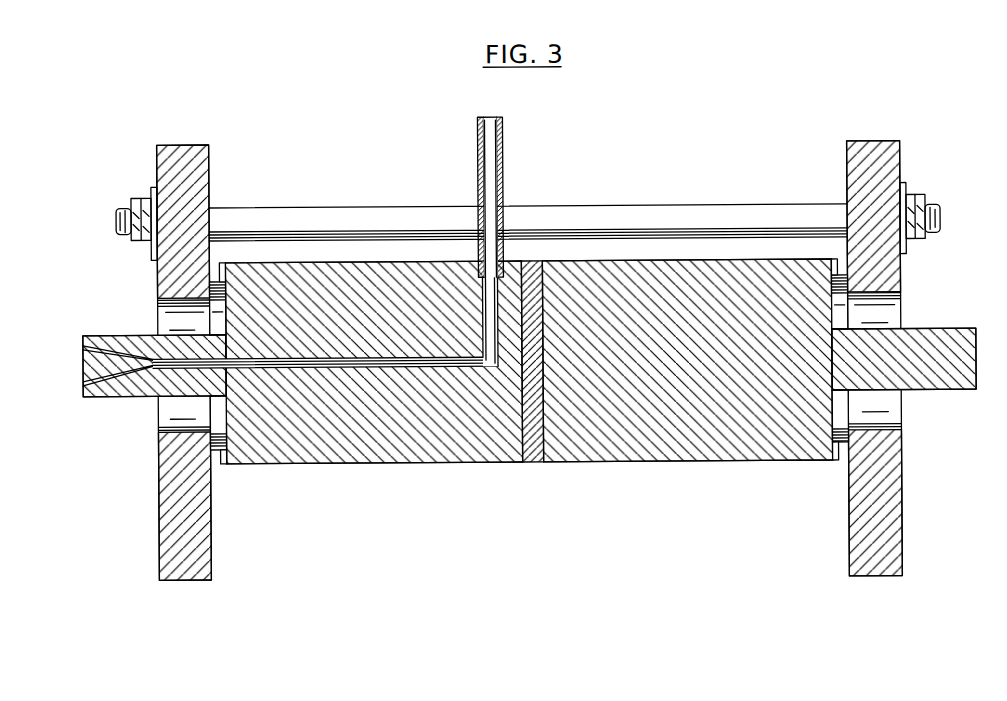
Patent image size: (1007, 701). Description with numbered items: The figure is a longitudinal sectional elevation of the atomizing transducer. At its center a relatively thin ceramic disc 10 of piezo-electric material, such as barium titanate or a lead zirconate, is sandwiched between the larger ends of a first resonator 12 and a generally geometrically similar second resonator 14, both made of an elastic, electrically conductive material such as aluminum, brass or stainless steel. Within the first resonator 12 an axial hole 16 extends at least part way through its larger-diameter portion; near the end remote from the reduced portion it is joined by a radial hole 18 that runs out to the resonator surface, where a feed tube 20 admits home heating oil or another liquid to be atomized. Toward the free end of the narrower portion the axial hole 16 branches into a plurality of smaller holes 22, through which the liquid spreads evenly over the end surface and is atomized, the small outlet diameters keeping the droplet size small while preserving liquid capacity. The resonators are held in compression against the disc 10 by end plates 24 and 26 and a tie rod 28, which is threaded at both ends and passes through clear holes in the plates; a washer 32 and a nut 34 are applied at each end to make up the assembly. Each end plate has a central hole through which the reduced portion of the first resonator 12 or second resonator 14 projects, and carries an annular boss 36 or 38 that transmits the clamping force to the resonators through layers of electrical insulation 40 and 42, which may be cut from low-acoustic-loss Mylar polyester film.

The ceramic disc 10 is at (536, 386).
The first resonator 12 is at (358, 482).
The second resonator 14 is at (687, 386).
The axial hole 16 is at (325, 381).
The radial hole 18 is at (468, 313).
The feed tube 20 is at (510, 197).
The smaller holes 22 is at (134, 366).
The end plate 24 is at (176, 135).
The end plate 26 is at (877, 131).
The tie rod 28 is at (528, 208).
The washer 32 is at (529, 204).
The nut 34 is at (535, 208).
The annular boss 36 is at (236, 483).
The annular boss 38 is at (828, 477).
The layer of electrical insulation 40 is at (237, 377).
The layer of electrical insulation 42 is at (821, 373).